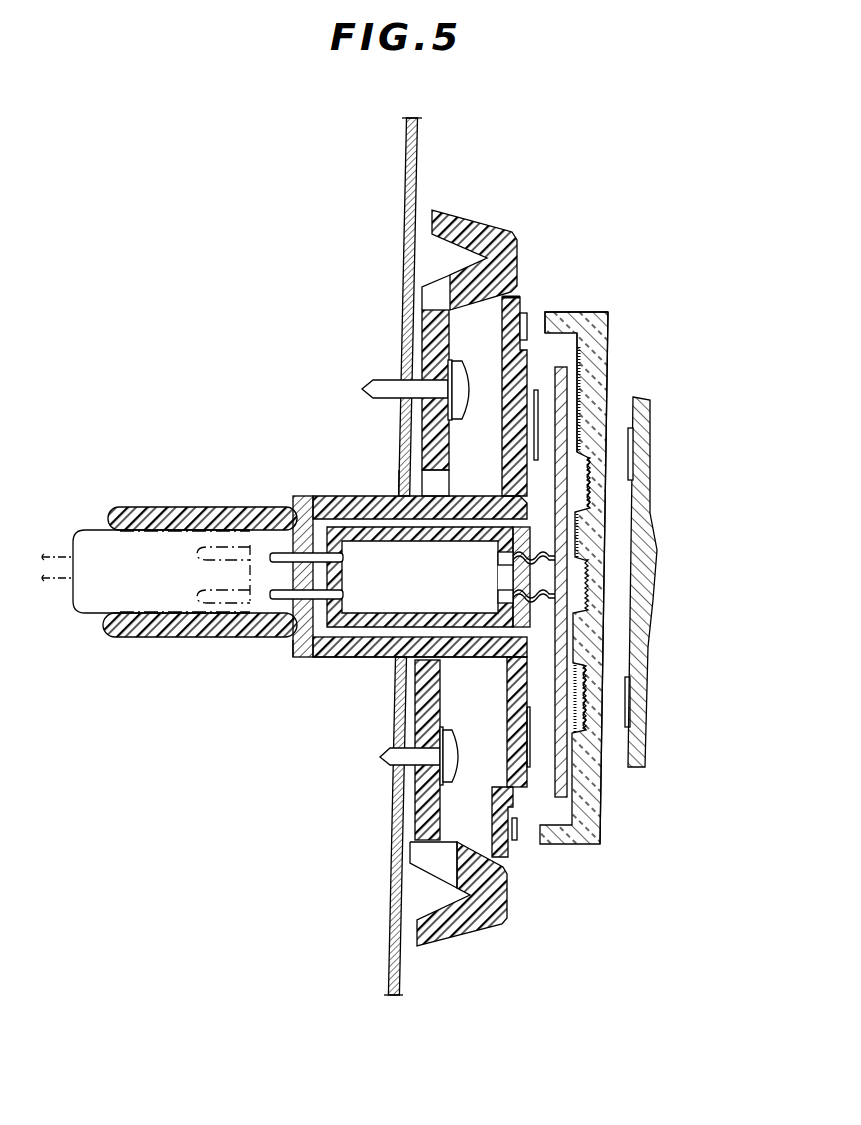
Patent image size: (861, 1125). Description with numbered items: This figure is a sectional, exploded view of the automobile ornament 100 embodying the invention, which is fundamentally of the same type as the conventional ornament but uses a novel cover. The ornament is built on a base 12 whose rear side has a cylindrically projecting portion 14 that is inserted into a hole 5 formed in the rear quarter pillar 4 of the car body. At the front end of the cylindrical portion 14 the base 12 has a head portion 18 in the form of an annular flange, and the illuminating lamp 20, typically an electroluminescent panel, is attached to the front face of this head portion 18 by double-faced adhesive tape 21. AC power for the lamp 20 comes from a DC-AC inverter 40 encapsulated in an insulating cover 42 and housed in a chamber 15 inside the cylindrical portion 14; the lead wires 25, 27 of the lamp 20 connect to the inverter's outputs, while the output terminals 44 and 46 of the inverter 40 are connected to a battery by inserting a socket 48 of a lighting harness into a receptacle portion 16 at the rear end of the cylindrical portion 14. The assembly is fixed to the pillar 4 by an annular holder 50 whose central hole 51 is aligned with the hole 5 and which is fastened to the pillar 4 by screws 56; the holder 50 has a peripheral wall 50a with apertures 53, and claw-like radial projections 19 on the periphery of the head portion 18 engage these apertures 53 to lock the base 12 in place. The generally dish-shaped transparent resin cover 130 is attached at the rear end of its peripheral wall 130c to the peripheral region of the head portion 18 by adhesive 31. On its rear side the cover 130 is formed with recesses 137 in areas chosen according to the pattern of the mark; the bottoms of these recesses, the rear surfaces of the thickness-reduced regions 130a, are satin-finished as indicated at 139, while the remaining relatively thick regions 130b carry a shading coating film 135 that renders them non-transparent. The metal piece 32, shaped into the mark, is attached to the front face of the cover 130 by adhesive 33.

The rear quarter pillar 4 is at (418, 130).
The hole 5 is at (404, 484).
The base 12 is at (293, 660).
The cylindrically projecting portion 14 is at (366, 630).
The chamber 15 is at (328, 632).
The receptacle portion 16 is at (168, 507).
The head portion 18 is at (507, 763).
The claw-like radial projections 19 is at (513, 302).
The illuminating lamp 20 is at (535, 430).
The double-faced adhesive tape 21 is at (530, 756).
The lead wire 25 is at (497, 577).
The lead wire 27 is at (498, 610).
The adhesive 31 is at (527, 318).
The metal piece 32 is at (648, 663).
The adhesive 33 is at (626, 450).
The DC-AC inverter 40 is at (347, 545).
The insulating cover 42 is at (370, 533).
The output terminal 44 is at (277, 548).
The output terminal 46 is at (272, 603).
The socket 48 is at (92, 528).
The holder 50 is at (443, 340).
The peripheral wall 50a is at (455, 860).
The central hole 51 is at (440, 488).
The apertures 53 is at (441, 292).
The screws 56 is at (376, 382).
The automobile ornament 100 is at (620, 314).
The cover 130 is at (605, 360).
The thickness-reduced regions 130a is at (600, 492).
The relatively thick regions 130b is at (600, 345).
The peripheral wall 130c is at (581, 318).
The shading coating film 135 is at (580, 345).
The recesses 137 is at (582, 473).
The satin finish 139 is at (582, 745).